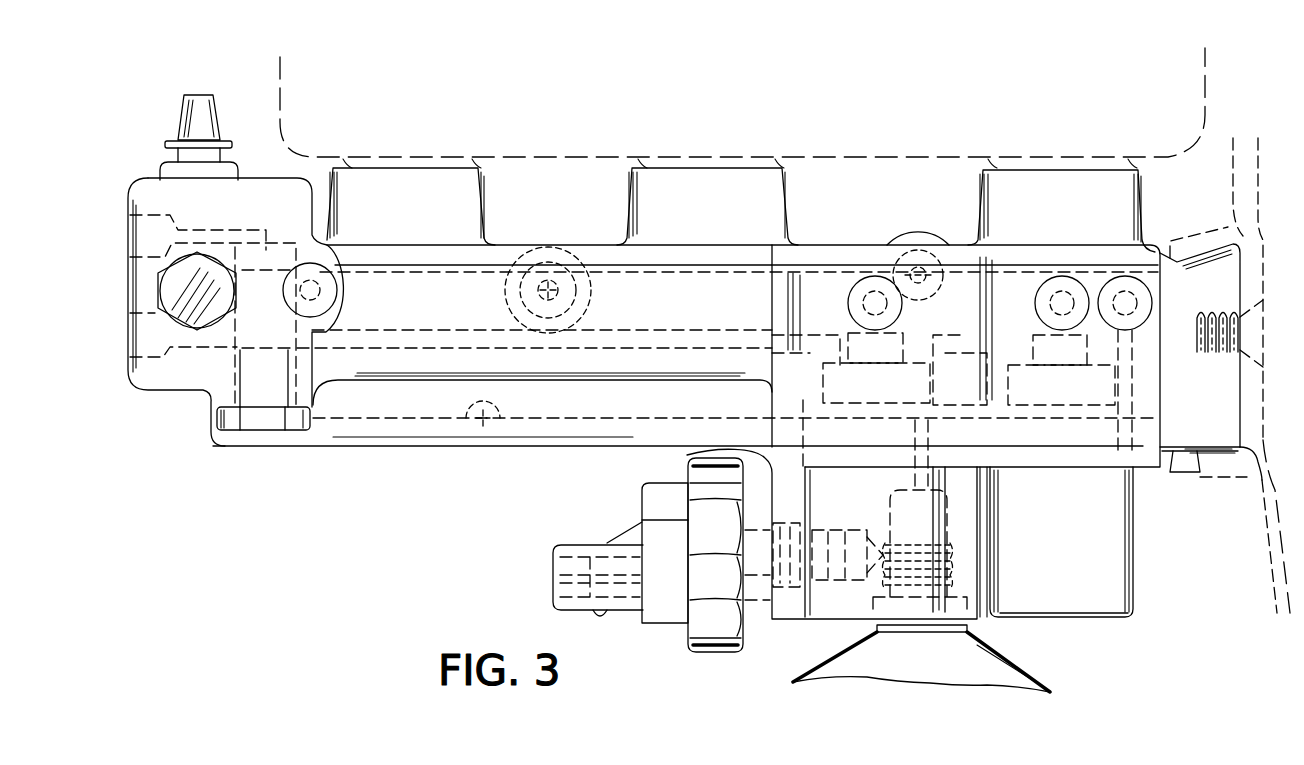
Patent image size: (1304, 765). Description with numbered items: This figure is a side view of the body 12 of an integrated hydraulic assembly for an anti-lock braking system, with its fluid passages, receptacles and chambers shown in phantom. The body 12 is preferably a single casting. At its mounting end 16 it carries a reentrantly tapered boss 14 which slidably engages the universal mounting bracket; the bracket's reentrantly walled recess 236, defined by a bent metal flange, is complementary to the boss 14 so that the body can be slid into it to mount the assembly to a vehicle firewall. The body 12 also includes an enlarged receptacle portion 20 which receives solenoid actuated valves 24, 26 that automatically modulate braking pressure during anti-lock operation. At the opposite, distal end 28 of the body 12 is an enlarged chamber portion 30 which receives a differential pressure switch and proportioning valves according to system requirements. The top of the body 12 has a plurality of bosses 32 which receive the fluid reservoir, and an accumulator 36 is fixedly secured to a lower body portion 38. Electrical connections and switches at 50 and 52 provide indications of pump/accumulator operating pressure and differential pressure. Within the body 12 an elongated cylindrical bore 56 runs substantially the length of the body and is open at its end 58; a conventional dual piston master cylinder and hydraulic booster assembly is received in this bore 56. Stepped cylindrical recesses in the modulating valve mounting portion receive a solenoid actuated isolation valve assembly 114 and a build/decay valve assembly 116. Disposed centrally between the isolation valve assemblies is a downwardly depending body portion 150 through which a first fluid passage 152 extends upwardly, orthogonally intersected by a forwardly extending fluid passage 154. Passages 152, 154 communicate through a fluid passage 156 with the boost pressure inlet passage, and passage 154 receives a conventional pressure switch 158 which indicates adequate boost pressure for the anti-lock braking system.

The body 12 is at (403, 428).
The reentrantly tapered boss 14 is at (1223, 262).
The mounting end 16 is at (1147, 398).
The enlarged receptacle portion 20 is at (963, 303).
The solenoid actuated valve 24 is at (915, 498).
The solenoid actuated valve 26 is at (1107, 550).
The distal end 28 is at (210, 397).
The enlarged chamber portion 30 is at (168, 382).
The bosses 32 is at (465, 215).
The accumulator 36 is at (1013, 663).
The lower body portion 38 is at (770, 627).
The electrical connection and switch 50 is at (650, 517).
The electrical connection and switch 52 is at (212, 127).
The elongated cylindrical bore 56 is at (497, 427).
The open end of bore 58 is at (1247, 480).
The isolation valve assembly 114 is at (803, 620).
The build/decay valve assembly 116 is at (1110, 607).
The downwardly depending body portion 150 is at (683, 455).
The first fluid passage 152 is at (907, 602).
The forwardly extending fluid passage 154 is at (840, 505).
The fluid passage 156 is at (942, 397).
The pressure switch 158 is at (663, 612).
The reentrantly walled recess 236 is at (1193, 458).